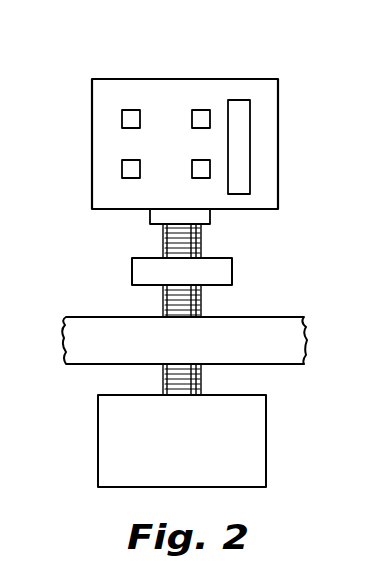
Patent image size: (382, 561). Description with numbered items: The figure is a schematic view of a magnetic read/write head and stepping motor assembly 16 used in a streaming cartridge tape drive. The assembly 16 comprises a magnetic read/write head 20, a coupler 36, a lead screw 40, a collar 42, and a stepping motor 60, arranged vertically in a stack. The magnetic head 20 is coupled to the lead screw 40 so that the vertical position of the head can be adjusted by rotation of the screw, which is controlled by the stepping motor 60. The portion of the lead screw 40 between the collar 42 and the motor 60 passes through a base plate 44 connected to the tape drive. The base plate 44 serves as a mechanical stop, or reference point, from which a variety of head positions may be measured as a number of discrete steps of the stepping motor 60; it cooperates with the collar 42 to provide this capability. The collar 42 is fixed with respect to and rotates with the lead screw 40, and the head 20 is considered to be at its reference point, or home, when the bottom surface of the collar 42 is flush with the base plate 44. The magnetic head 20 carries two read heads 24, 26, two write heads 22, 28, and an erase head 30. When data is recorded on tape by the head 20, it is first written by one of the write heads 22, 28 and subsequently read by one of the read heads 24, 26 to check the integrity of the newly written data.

The magnetic read/write head and stepping motor assembly 16 is at (130, 68).
The magnetic read/write head 20 is at (257, 88).
The write head 22 is at (122, 116).
The read head 24 is at (122, 168).
The read head 26 is at (203, 114).
The write head 28 is at (203, 172).
The erase head 30 is at (242, 133).
The coupler 36 is at (210, 217).
The lead screw 40 is at (163, 235).
The collar 42 is at (217, 273).
The base plate 44 is at (72, 357).
The stepping motor 60 is at (108, 472).